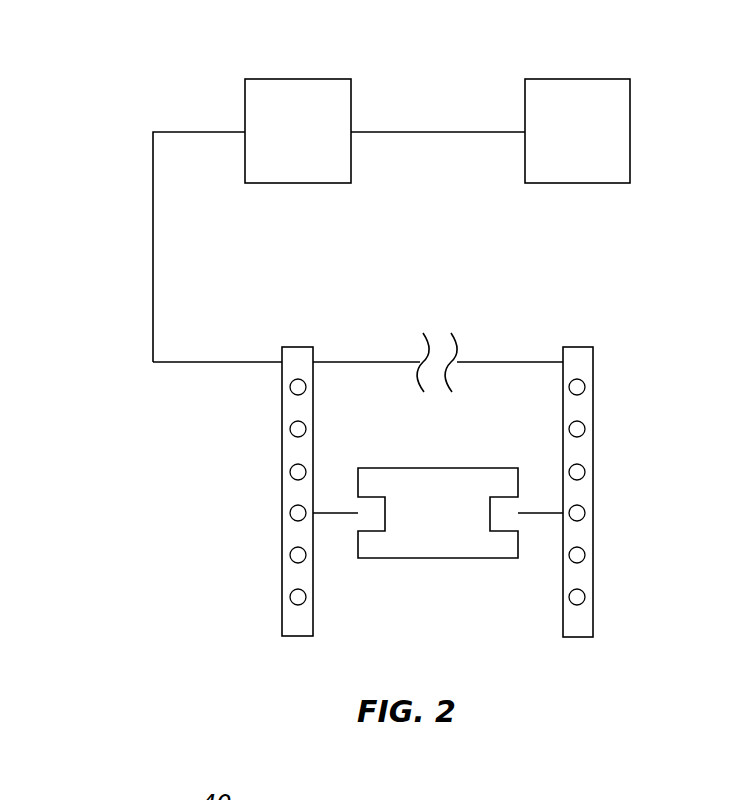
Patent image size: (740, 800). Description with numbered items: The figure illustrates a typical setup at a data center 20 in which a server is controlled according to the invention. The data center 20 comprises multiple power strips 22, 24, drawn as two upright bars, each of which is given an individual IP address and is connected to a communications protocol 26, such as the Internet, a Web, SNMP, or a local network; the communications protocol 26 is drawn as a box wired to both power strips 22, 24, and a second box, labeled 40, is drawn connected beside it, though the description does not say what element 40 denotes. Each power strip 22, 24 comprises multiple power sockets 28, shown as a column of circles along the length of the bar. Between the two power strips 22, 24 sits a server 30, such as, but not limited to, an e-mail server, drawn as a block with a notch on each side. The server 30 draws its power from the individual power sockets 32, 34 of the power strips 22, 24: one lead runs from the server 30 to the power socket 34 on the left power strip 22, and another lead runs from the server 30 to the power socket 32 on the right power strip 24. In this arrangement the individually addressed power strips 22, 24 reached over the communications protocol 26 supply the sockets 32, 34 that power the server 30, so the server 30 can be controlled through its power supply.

The data center 20 is at (110, 50).
The power strip 22 is at (282, 620).
The power strip 24 is at (593, 620).
The communications protocol 26 is at (258, 79).
The power sockets 28 is at (585, 384).
The server 30 is at (480, 558).
The power socket 32 is at (585, 508).
The power socket 34 is at (290, 506).
The power source 40 is at (618, 79).